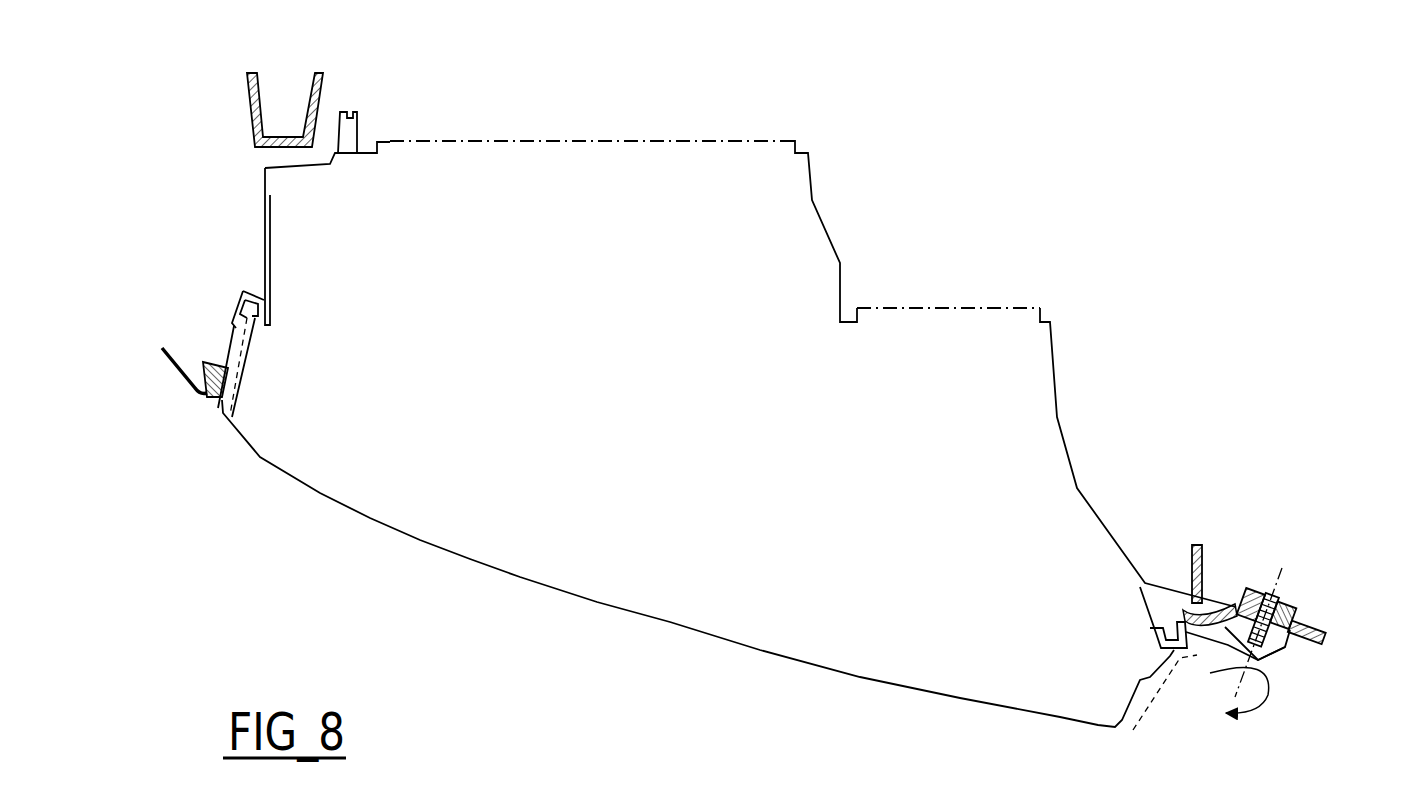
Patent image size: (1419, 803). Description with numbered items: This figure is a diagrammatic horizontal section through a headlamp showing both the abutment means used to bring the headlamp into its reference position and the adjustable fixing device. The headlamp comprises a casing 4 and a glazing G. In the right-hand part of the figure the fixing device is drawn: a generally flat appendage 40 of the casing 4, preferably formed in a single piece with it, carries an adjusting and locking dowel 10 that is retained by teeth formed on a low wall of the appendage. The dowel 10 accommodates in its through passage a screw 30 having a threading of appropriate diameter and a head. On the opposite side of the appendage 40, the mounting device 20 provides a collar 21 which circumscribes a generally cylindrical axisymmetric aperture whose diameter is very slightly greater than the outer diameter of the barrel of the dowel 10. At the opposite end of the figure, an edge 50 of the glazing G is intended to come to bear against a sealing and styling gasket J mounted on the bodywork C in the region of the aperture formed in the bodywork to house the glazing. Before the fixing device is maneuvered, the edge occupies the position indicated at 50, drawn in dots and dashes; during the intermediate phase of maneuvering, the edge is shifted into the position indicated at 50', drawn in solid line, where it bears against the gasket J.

The casing 4 is at (846, 236).
The glazing G is at (598, 602).
The edge of the glazing 50 is at (270, 372).
The edge of the glazing in shifted position 50' is at (200, 307).
The bodywork C is at (170, 360).
The sealing and styling gasket J is at (217, 402).
The adjusting and locking dowel 10 is at (1228, 650).
The mounting device 20 is at (1225, 590).
The collar 21 is at (1285, 598).
The screw 30 is at (1268, 657).
The appendage 40 is at (1298, 650).